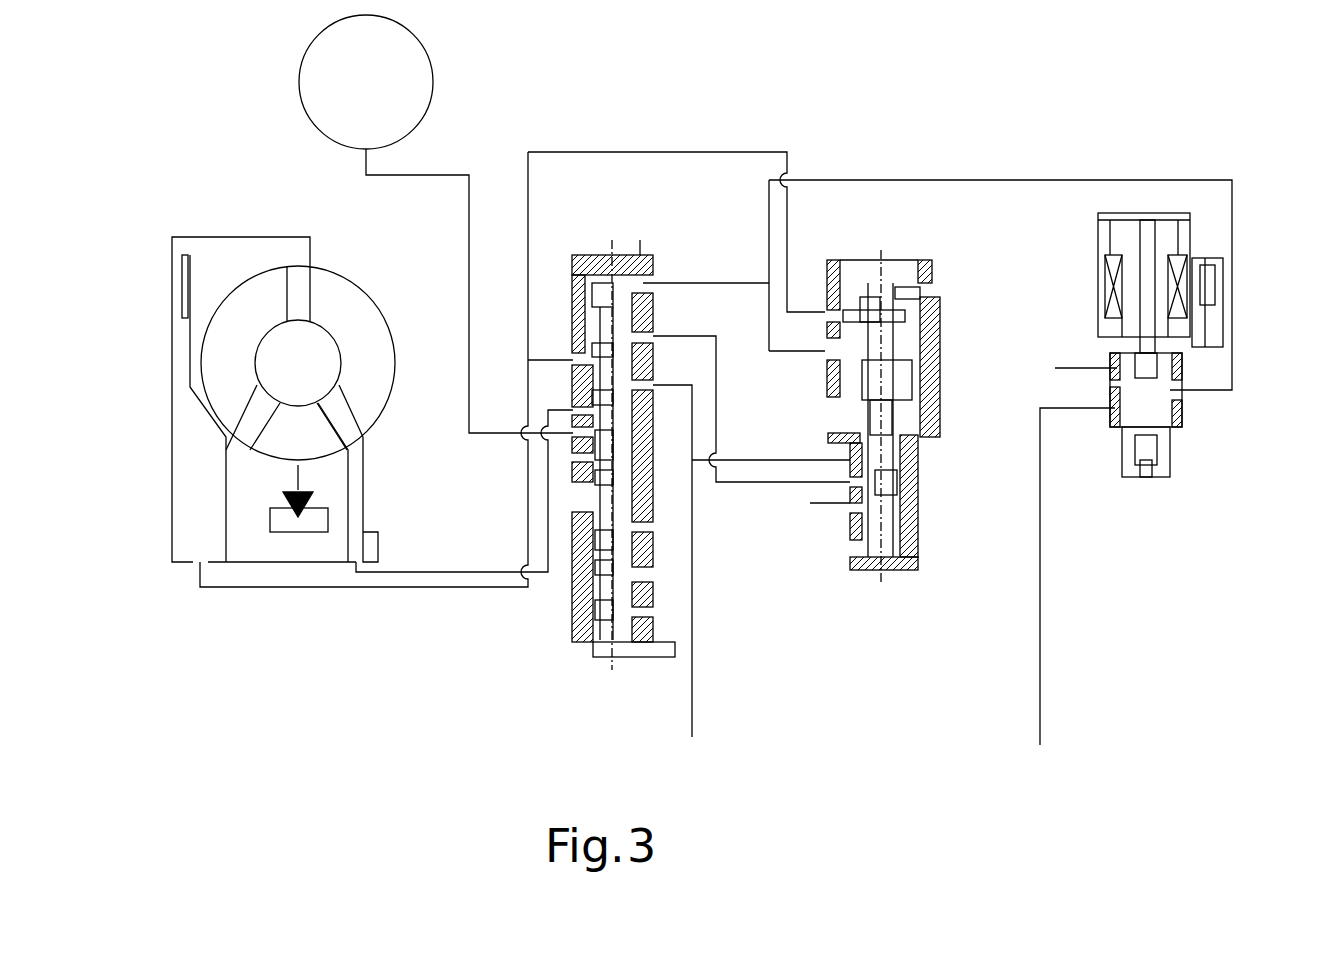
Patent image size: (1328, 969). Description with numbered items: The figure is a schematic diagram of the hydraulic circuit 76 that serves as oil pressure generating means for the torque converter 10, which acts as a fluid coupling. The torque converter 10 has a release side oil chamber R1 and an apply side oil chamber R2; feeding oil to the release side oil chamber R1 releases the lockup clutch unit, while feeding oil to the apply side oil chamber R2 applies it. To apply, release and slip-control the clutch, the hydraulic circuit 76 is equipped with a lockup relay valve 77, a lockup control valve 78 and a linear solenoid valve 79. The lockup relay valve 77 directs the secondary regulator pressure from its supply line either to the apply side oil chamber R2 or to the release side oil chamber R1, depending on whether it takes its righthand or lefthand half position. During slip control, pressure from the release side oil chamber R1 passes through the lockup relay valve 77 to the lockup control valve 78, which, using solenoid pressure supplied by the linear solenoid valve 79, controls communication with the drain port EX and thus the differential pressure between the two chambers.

The torque converter 10 is at (235, 210).
The hydraulic circuit 76 is at (818, 135).
The lockup relay valve 77 is at (640, 250).
The lockup control valve 78 is at (912, 258).
The linear solenoid valve 79 is at (1195, 213).
The release side oil chamber R1 is at (200, 517).
The apply side oil chamber R2 is at (322, 367).